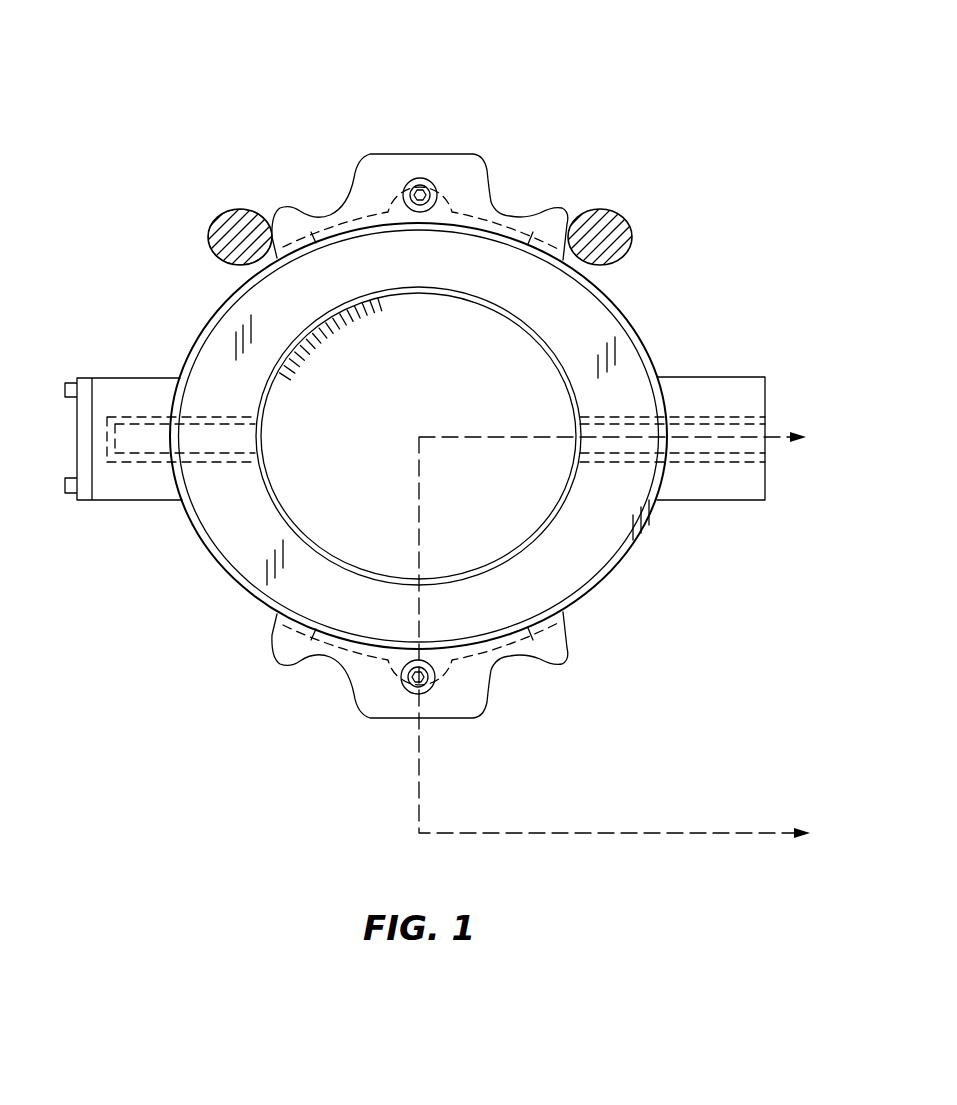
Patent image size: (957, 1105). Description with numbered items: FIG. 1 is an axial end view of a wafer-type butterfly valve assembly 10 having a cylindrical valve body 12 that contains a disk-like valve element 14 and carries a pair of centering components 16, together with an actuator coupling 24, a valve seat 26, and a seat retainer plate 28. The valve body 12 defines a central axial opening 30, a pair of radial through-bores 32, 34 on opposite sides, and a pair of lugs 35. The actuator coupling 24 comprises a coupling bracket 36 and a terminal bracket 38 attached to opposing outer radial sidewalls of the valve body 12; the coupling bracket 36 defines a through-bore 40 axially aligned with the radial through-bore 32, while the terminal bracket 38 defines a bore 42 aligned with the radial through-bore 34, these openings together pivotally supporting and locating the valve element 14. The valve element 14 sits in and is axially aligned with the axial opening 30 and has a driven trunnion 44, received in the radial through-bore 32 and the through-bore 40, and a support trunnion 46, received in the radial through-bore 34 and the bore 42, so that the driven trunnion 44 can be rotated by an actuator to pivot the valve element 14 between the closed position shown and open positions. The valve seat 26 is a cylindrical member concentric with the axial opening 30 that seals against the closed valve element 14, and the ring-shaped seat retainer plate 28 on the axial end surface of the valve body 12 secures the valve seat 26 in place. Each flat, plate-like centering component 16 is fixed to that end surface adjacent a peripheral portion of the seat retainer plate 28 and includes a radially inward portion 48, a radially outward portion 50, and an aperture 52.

The valve assembly 10 is at (604, 76).
The valve body 12 is at (625, 305).
The valve element 14 is at (432, 392).
The centering components 16 is at (420, 438).
The actuator coupling 24 is at (742, 350).
The valve seat 26 is at (270, 498).
The seat retainer plate 28 is at (607, 541).
The axial opening 30 is at (320, 530).
The radial through-bore 32 is at (640, 463).
The radial through-bore 34 is at (227, 463).
The lugs 35 is at (457, 180).
The coupling bracket 36 is at (752, 378).
The terminal bracket 38 is at (143, 500).
The through-bore 40 is at (733, 463).
The bore 42 is at (145, 418).
The driven trunnion 44 is at (745, 420).
The support trunnion 46 is at (132, 447).
The radially inward portion 48 is at (510, 244).
The radially outward portion 50 is at (490, 200).
The aperture 52 is at (405, 178).